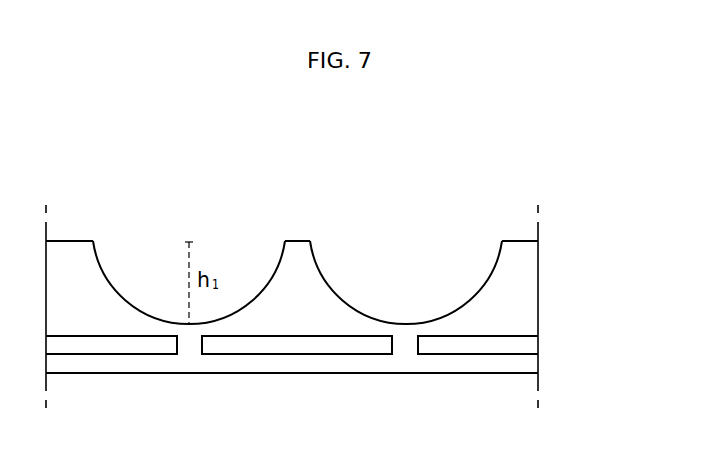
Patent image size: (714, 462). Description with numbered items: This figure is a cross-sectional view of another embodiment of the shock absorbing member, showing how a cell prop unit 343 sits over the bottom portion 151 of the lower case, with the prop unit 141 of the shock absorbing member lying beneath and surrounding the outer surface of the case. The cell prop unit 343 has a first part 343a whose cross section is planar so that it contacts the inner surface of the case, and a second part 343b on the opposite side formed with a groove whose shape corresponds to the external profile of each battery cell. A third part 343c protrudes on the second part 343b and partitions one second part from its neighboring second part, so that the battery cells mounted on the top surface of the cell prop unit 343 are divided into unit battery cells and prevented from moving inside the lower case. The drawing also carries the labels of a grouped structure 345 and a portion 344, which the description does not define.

The optical pattern unit 345 is at (292, 215).
The cell prop unit 343 is at (297, 236).
The first part 343a is at (193, 342).
The second part 343b is at (406, 247).
The third part 343c is at (297, 241).
The connection portion 344 is at (405, 345).
The bottom portion 151 is at (532, 345).
The prop unit 141 is at (532, 363).